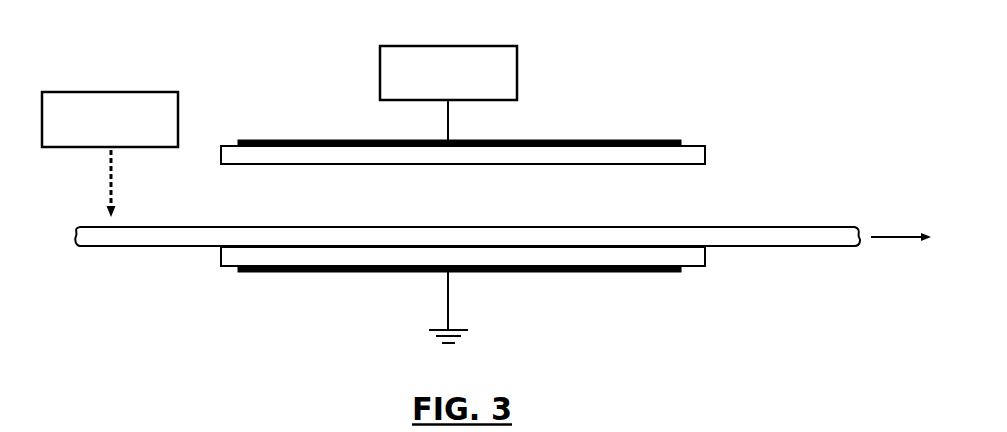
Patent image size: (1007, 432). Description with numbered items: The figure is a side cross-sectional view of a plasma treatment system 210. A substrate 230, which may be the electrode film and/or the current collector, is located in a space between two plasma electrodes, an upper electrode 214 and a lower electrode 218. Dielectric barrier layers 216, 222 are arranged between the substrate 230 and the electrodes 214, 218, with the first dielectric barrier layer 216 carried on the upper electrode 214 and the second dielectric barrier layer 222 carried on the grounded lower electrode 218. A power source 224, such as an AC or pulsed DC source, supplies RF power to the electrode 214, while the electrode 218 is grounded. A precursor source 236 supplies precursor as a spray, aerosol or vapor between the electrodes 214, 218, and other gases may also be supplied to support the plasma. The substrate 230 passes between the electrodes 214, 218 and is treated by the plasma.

The plasma treatment system 210 is at (244, 51).
The electrode 214 is at (596, 140).
The dielectric barrier layer 216 is at (692, 146).
The electrode 218 is at (582, 272).
The dielectric barrier layer 222 is at (689, 267).
The power source 224 is at (429, 46).
The substrate 230 is at (770, 228).
The precursor source 236 is at (110, 92).